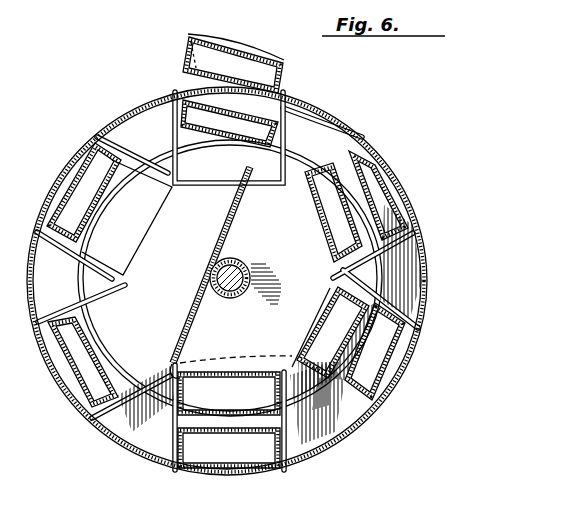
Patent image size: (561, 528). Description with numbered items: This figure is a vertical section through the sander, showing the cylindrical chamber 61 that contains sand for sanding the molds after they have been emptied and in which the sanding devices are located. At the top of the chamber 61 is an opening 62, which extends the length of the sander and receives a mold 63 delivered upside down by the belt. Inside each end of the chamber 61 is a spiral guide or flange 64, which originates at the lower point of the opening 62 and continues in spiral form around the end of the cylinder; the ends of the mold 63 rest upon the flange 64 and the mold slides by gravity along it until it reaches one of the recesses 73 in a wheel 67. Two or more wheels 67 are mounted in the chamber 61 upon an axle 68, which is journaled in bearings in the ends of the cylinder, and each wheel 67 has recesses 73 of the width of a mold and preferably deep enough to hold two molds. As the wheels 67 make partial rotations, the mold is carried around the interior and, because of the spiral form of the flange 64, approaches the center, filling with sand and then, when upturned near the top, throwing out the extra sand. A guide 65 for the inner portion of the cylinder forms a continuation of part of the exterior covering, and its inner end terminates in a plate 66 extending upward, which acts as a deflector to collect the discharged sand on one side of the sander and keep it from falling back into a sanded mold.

The cylindrical chamber 61 is at (429, 280).
The opening 62 is at (192, 43).
The mold 63 is at (183, 67).
The spiral guide or flange 64 is at (102, 207).
The guide 65 is at (318, 130).
The plate 66 is at (228, 226).
The wheel 67 is at (129, 217).
The axle 68 is at (247, 263).
The recess 73 is at (117, 241).